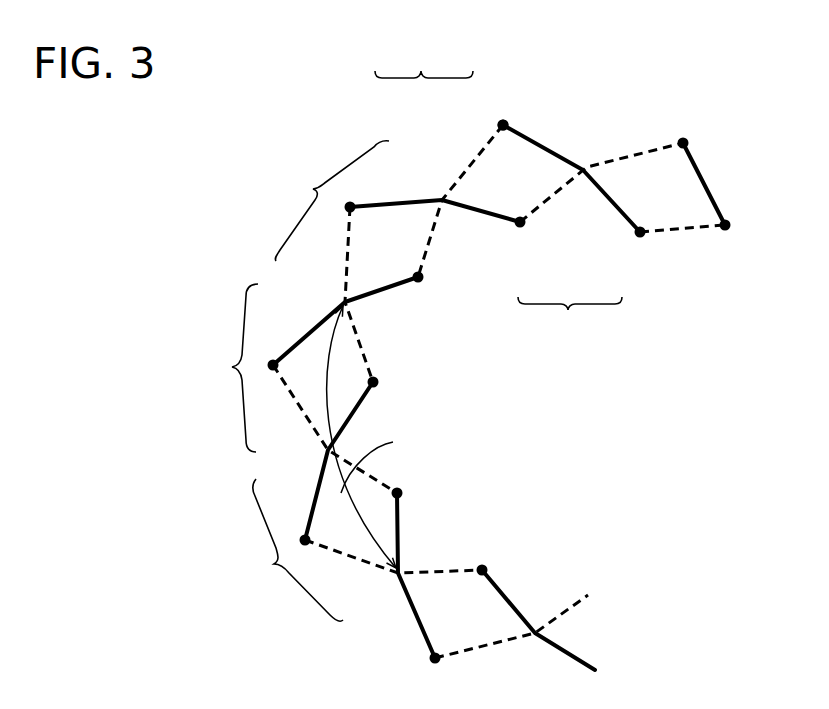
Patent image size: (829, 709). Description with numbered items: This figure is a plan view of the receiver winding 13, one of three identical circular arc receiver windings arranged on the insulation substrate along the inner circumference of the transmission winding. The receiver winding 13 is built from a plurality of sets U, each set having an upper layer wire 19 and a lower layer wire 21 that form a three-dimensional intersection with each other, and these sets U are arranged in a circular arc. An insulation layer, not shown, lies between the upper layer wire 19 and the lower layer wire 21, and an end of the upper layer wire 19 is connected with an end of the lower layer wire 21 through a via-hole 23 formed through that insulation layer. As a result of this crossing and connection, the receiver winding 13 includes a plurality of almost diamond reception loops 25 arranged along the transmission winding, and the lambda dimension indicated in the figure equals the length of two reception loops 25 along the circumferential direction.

The receiver winding 13 is at (729, 65).
The upper layer wire 19 is at (413, 200).
The lower layer wire 21 is at (477, 153).
The via-hole 23 is at (503, 125).
The reception loop 25 is at (292, 381).